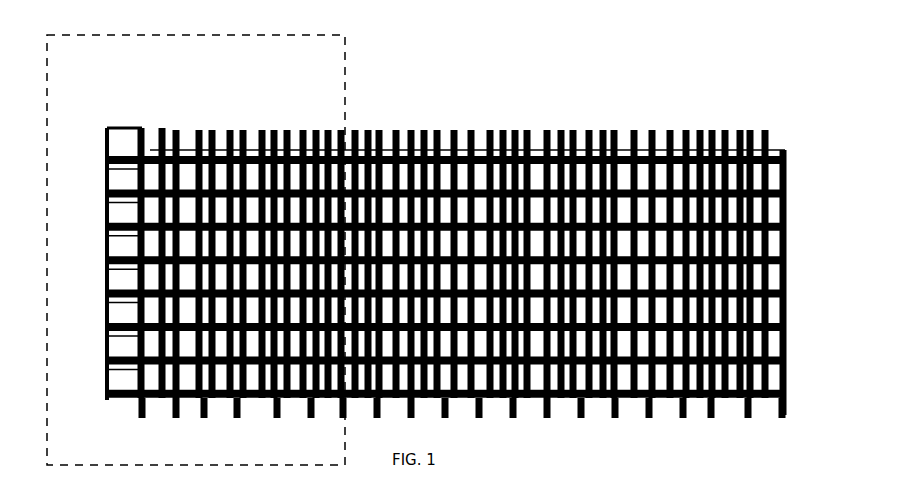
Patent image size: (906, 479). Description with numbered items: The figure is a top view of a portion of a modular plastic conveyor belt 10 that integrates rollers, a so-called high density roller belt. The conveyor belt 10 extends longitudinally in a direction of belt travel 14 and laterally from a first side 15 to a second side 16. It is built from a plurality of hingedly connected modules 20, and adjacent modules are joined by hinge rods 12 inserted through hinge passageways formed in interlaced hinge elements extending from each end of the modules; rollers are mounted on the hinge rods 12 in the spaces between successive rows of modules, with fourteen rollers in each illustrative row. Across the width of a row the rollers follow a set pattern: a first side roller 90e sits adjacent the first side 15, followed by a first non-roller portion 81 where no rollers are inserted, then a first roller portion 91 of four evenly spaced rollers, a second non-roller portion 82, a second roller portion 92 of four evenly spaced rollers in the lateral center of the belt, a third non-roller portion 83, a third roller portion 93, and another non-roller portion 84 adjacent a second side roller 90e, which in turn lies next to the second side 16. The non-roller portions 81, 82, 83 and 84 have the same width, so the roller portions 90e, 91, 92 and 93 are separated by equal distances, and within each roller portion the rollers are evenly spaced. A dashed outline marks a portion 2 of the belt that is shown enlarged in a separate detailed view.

The portion of the conveyor belt 2 is at (345, 58).
The conveyor belt 10 is at (200, 433).
The hinge rods 12 is at (141, 128).
The direction of belt travel 14 is at (802, 302).
The first side 15 is at (98, 187).
The second side 16 is at (800, 158).
The modules 20 is at (106, 132).
The first non-roller portion 81 is at (220, 126).
The second non-roller portion 82 is at (380, 125).
The third non-roller portion 83 is at (552, 120).
The non-roller portion 84 is at (720, 122).
The side roller 90e is at (157, 127).
The first roller portion 91 is at (330, 122).
The second roller portion 92 is at (495, 120).
The third roller portion 93 is at (660, 120).